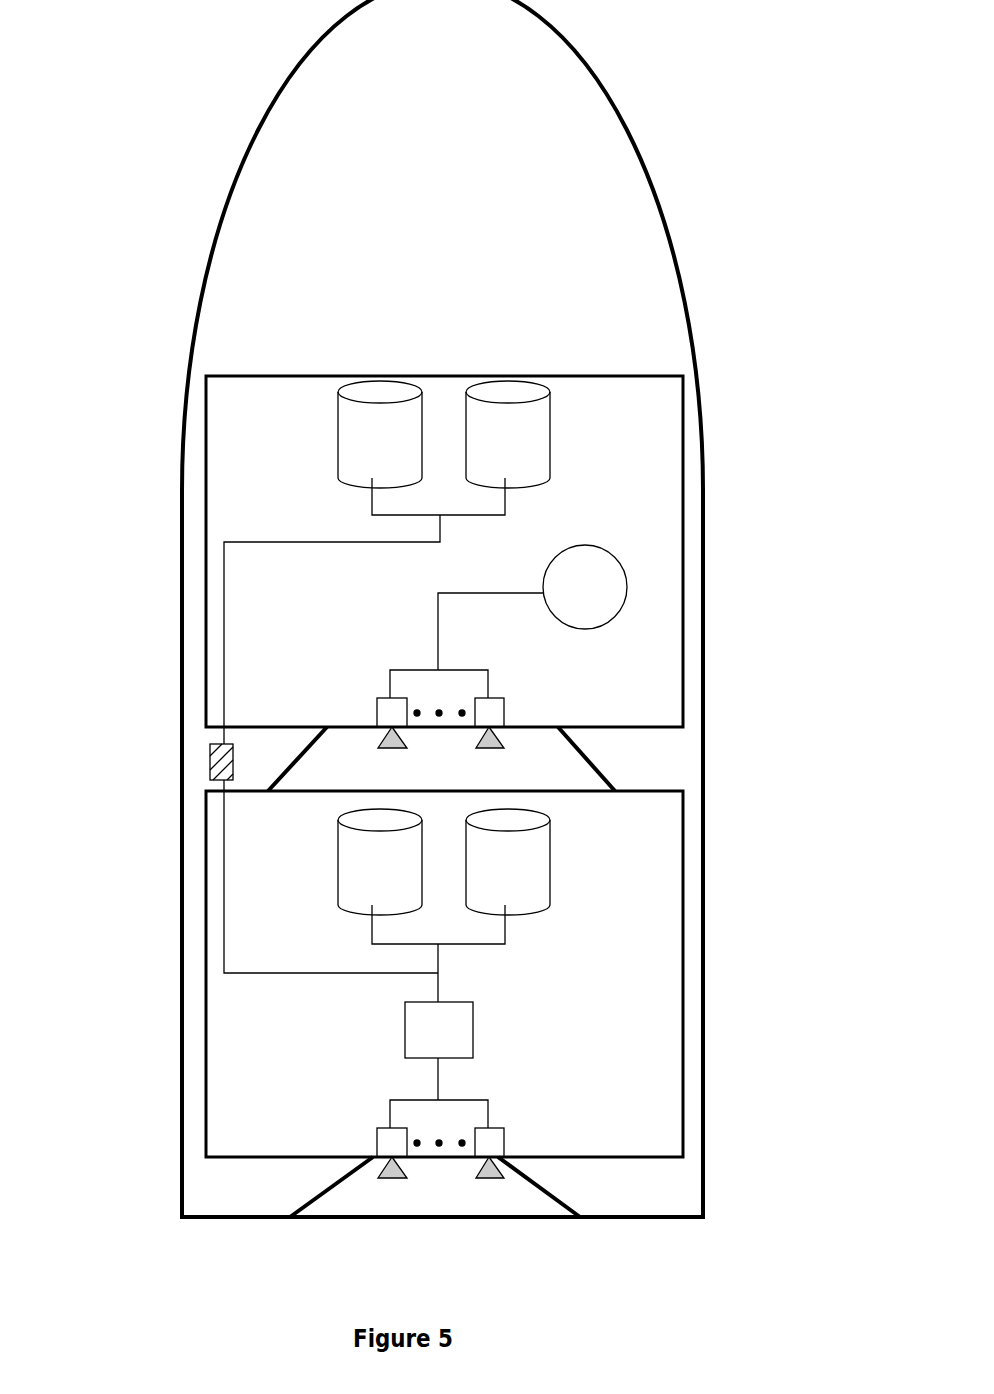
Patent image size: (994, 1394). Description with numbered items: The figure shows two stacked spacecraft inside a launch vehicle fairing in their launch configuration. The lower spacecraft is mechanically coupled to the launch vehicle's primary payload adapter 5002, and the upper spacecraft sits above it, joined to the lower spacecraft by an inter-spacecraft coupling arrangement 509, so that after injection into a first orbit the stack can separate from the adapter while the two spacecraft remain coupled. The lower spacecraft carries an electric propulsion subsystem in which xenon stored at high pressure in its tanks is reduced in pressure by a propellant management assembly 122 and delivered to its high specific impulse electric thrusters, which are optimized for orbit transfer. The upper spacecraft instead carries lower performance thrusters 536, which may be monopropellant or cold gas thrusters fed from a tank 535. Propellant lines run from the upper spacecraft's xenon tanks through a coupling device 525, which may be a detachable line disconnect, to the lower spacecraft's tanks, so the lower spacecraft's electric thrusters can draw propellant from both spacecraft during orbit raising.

The tank 535 is at (603, 570).
The thrusters 536 is at (377, 713).
The coupling device 525 is at (208, 752).
The inter-spacecraft coupling arrangement 509 is at (590, 757).
The propellant management assembly 122 is at (420, 1039).
The primary payload adapter 5002 is at (555, 1200).